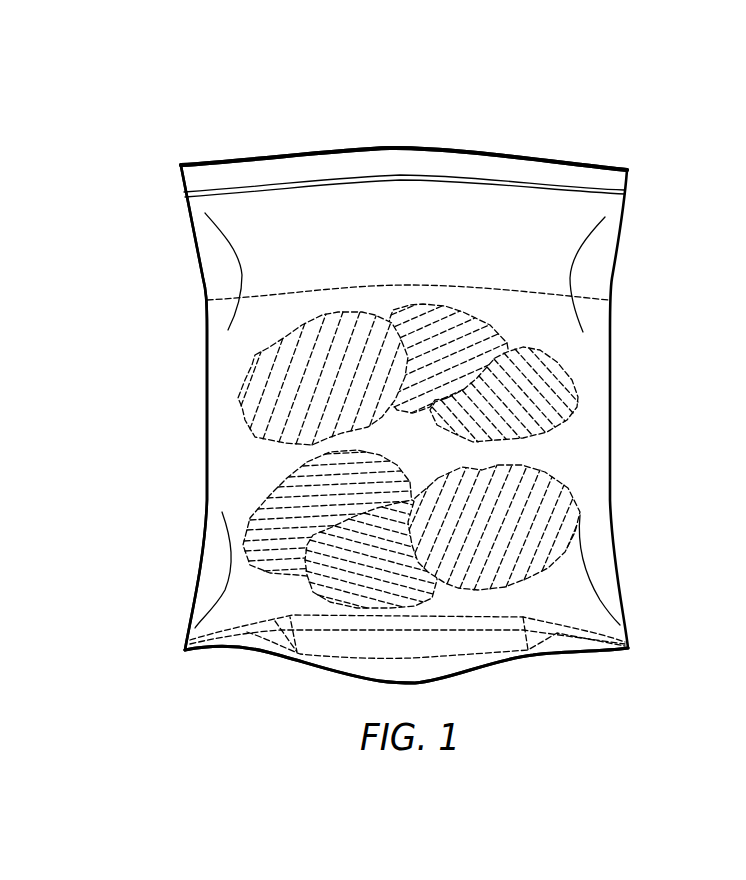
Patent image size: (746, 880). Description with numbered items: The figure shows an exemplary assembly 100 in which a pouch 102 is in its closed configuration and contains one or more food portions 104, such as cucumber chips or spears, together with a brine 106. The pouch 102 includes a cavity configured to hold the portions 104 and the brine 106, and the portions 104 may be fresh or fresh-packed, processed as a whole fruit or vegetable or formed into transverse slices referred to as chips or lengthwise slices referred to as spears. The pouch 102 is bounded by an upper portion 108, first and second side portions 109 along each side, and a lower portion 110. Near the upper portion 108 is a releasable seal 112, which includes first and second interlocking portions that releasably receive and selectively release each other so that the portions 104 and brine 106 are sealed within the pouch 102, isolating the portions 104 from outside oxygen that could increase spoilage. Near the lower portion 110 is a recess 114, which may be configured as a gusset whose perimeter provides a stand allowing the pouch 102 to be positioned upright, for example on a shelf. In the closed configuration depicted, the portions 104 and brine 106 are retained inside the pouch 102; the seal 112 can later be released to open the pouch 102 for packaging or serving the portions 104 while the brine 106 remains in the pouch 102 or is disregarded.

The assembly 100 is at (548, 75).
The pouch 102 is at (205, 388).
The food portions 104 is at (578, 420).
The brine 106 is at (593, 340).
The upper portion 108 is at (303, 143).
The first and second side portions 109 is at (198, 496).
The lower portion 110 is at (298, 683).
The releasable seal 112 is at (545, 187).
The recess 114 is at (497, 652).